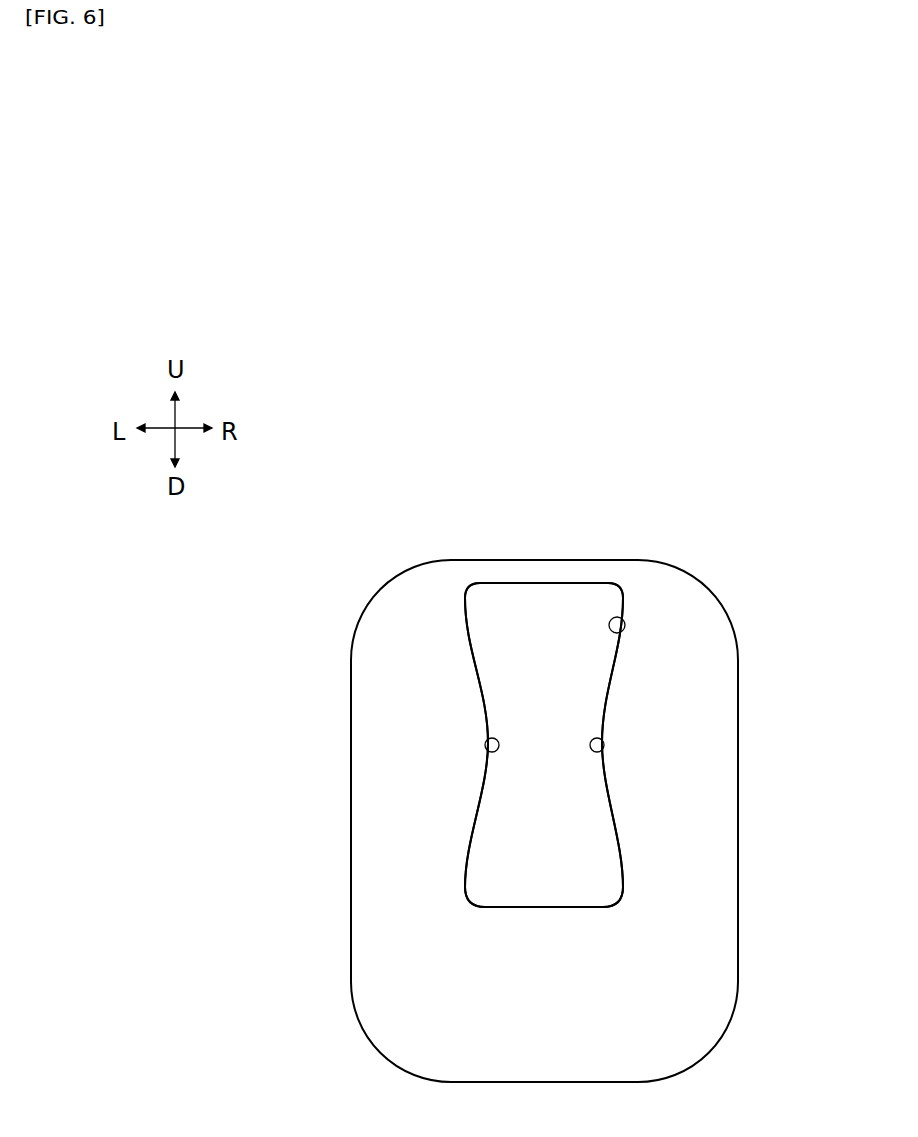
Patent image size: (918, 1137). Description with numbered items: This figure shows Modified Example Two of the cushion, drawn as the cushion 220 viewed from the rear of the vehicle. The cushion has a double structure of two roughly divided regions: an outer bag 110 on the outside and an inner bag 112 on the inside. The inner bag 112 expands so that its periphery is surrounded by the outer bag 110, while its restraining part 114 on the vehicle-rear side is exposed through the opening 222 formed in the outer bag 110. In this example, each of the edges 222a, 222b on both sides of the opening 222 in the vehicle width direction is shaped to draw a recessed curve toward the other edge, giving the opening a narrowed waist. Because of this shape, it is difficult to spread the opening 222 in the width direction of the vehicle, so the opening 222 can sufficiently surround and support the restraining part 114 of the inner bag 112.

The outer bag 110 is at (717, 687).
The inner bag 112 is at (548, 580).
The restraining part 114 is at (505, 597).
The cushion 220 is at (336, 554).
The opening 222 is at (623, 612).
The edge 222a is at (486, 743).
The edge 222b is at (604, 742).